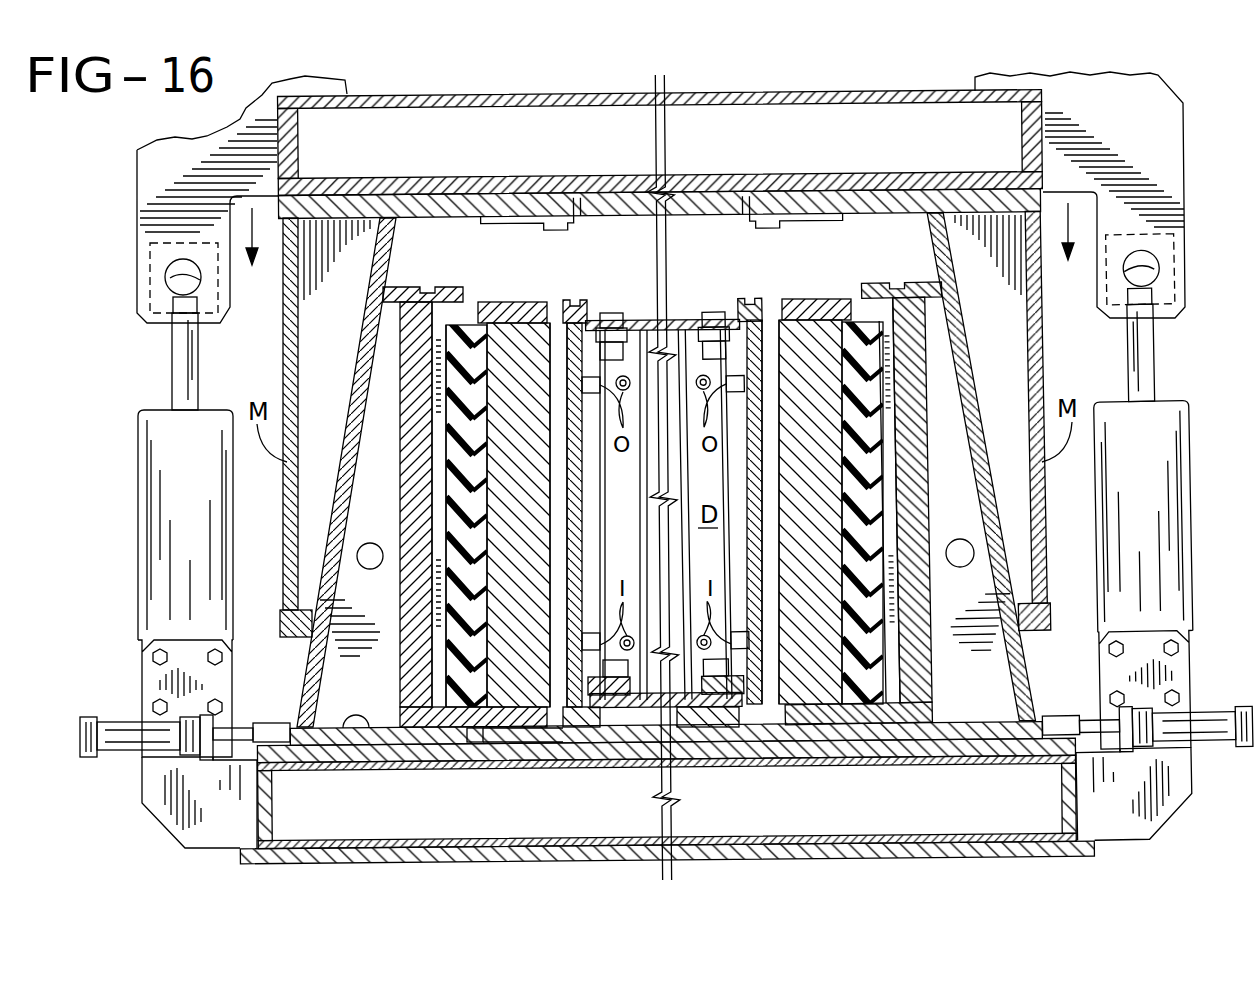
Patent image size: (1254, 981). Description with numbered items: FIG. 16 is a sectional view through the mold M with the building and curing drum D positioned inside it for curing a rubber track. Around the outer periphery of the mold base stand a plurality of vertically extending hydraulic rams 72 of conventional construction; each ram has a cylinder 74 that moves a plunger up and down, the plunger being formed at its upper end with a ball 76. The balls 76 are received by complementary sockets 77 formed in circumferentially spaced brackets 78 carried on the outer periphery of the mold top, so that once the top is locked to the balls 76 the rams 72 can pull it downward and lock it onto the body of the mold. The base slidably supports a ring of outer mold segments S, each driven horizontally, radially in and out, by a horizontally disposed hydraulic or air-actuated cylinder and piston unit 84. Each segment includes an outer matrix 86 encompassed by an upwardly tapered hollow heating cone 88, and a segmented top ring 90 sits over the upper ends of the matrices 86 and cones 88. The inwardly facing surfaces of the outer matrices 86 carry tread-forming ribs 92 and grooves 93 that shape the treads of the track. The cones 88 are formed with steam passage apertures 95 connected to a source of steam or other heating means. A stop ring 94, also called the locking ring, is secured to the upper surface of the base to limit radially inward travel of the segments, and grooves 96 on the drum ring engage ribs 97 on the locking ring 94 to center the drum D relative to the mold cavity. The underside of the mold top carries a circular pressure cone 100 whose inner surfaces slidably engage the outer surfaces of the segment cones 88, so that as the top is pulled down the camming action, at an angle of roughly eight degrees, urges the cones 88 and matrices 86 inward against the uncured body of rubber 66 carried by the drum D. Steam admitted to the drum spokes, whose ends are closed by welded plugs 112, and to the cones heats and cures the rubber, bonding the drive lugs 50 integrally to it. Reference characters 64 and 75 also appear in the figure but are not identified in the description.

The drive lugs 50 is at (833, 322).
The elastomeric seal strip 64 is at (482, 327).
The uncured body of rubber 66 is at (862, 325).
The hydraulic rams 72 is at (172, 484).
The cylinder 74 is at (172, 574).
The piston rod 75 is at (175, 372).
The ball 76 is at (170, 262).
The socket 77 is at (178, 283).
The brackets 78 is at (160, 170).
The cylinder and piston units 84 is at (125, 730).
The outer matrix 86 is at (417, 372).
The heating cone 88 is at (332, 700).
The segmented top ring 90 is at (415, 283).
The ribs 92 is at (440, 447).
The grooves 93 is at (445, 590).
The stop ring 94 is at (752, 738).
The steam passage apertures 95 is at (370, 543).
The grooves 96 is at (572, 720).
The ribs 97 is at (558, 730).
The circular pressure cone 100 is at (337, 303).
The plug 112 is at (580, 316).